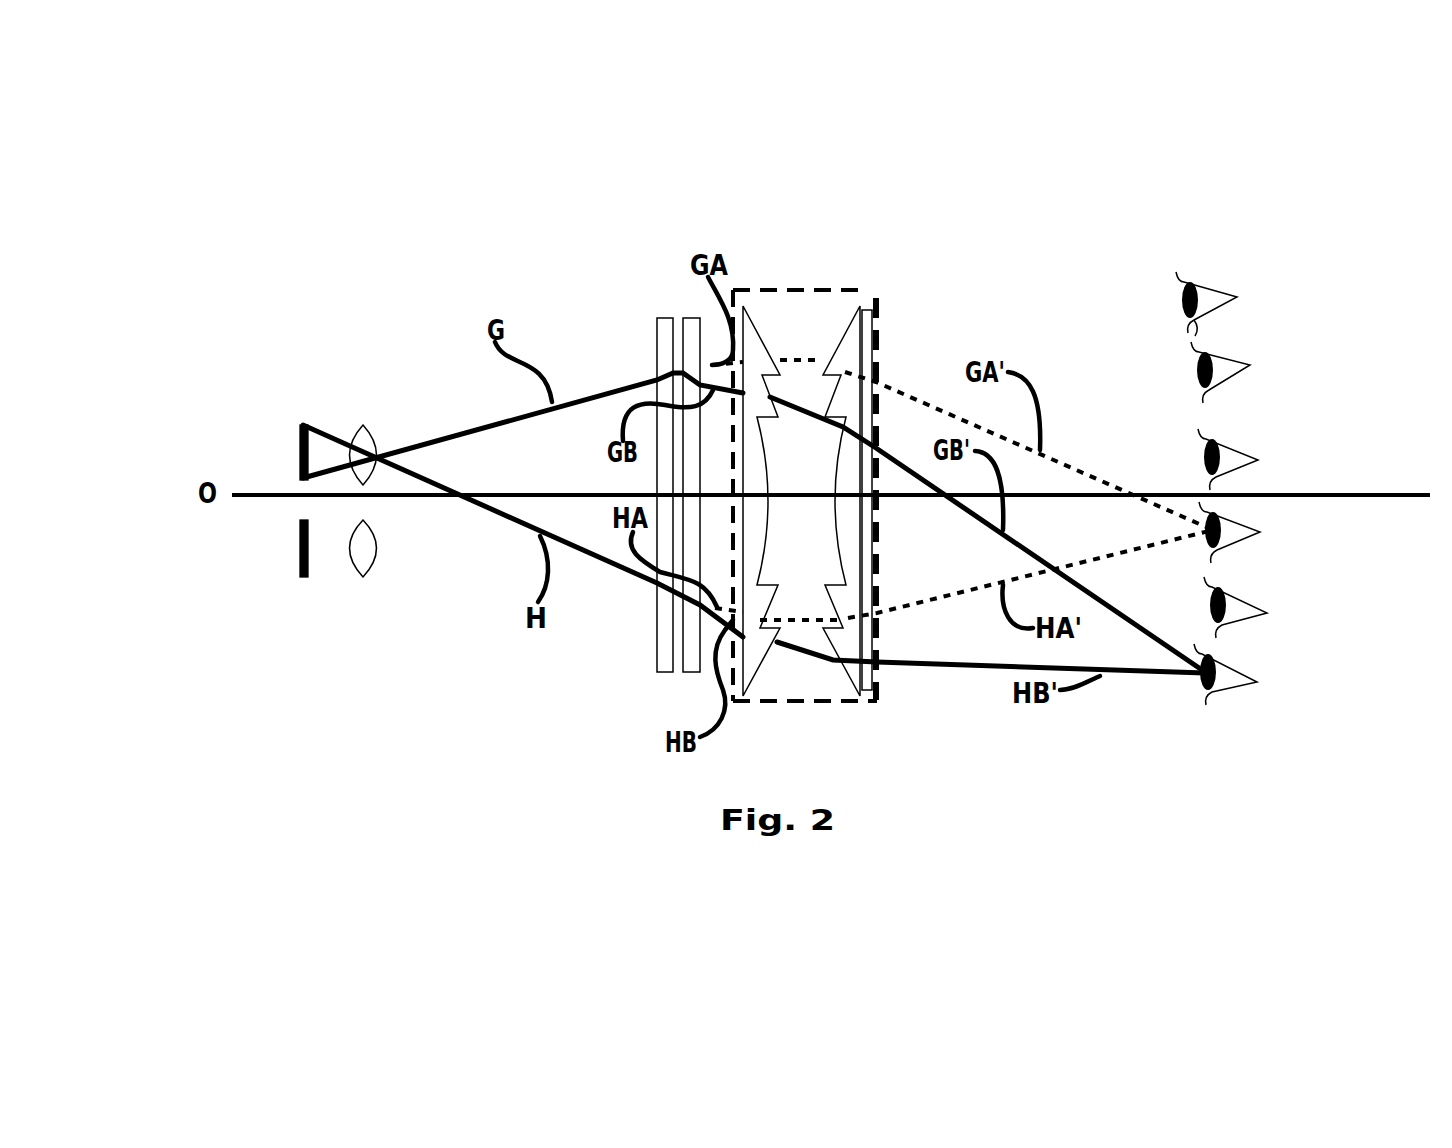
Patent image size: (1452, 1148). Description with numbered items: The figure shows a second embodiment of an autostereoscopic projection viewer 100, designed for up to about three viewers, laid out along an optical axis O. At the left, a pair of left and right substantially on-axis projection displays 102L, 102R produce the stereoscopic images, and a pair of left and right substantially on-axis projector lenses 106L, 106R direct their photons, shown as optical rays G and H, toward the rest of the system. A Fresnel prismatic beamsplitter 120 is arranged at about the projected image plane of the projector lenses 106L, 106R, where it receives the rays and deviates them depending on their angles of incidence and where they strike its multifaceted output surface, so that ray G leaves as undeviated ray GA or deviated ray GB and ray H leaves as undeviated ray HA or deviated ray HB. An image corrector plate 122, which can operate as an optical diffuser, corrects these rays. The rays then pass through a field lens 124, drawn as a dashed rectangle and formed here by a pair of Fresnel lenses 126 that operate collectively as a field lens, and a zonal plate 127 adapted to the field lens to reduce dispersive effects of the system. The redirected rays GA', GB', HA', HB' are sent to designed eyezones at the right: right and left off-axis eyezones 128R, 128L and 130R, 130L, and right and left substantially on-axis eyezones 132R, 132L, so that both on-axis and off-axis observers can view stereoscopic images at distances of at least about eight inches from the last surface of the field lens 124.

The autostereoscopic projection viewer 100 is at (358, 181).
The left projection display 102L is at (300, 442).
The right projection display 102R is at (300, 527).
The left projector lens 106L is at (352, 432).
The right projector lens 106R is at (353, 567).
The Fresnel prismatic beamsplitter 120 is at (657, 671).
The image corrector plate 122 is at (688, 318).
The field lens 124 is at (820, 703).
The pair of Fresnel lenses 126 is at (838, 328).
The zonal plate 127 is at (875, 683).
The right off-axis eyezone 128R is at (1222, 620).
The left off-axis eyezone 128L is at (1220, 686).
The right off-axis eyezone 130R is at (1208, 293).
The left off-axis eyezone 130L is at (1222, 360).
The right on-axis eyezone 132R is at (1247, 453).
The left on-axis eyezone 132L is at (1240, 540).